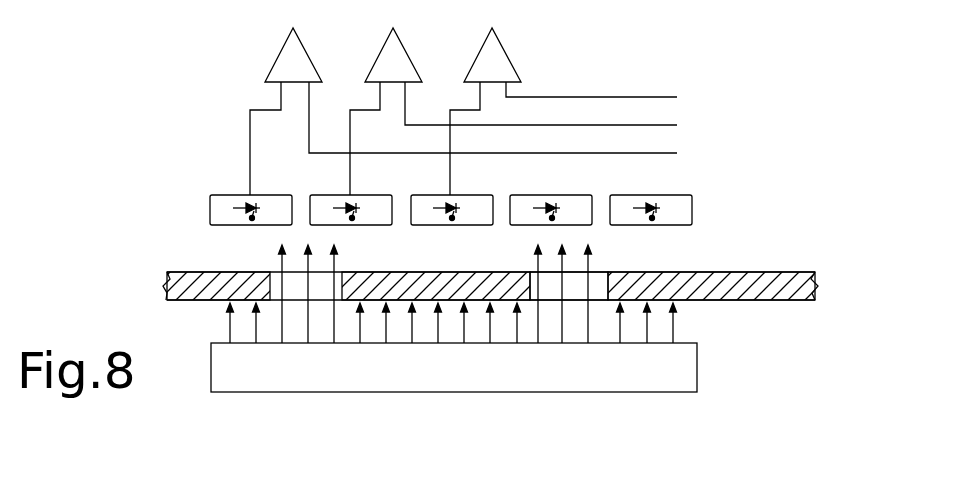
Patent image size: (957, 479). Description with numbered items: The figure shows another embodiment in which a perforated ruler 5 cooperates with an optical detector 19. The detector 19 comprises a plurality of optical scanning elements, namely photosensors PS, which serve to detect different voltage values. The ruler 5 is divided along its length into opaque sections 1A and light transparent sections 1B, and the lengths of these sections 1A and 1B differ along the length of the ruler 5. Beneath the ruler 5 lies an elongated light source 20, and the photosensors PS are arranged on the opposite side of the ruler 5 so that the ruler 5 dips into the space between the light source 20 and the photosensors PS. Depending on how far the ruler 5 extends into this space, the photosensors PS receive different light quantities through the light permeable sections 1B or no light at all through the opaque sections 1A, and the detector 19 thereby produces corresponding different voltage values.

The detector 19 is at (714, 139).
The photosensors PS is at (220, 205).
The ruler 5 is at (860, 343).
The opaque sections 1A is at (185, 272).
The light transparent sections 1B is at (603, 272).
The light source 20 is at (257, 380).